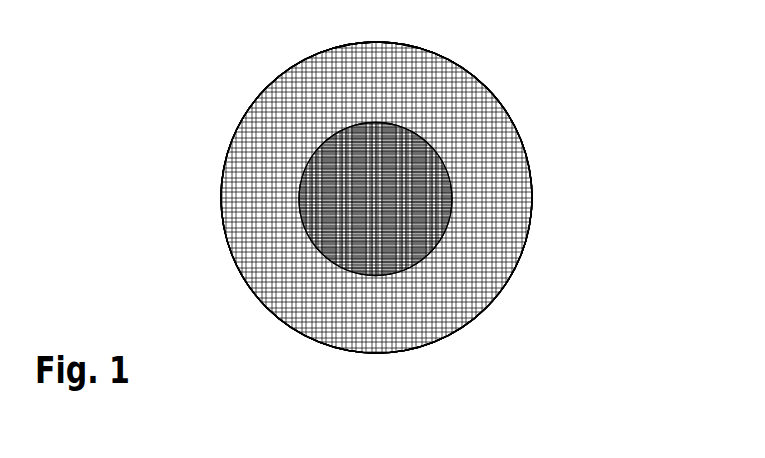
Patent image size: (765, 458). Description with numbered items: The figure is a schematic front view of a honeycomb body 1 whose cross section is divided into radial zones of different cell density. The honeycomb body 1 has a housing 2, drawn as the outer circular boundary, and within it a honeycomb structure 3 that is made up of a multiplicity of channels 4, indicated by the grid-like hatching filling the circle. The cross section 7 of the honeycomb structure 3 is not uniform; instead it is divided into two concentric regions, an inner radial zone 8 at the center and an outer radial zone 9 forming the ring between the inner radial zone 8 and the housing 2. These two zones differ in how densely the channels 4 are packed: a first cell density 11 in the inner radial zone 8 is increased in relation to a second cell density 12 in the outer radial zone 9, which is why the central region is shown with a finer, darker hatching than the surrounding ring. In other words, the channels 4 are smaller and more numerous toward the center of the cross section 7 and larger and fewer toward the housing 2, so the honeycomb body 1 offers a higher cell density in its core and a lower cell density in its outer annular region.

The honeycomb body 1 is at (538, 78).
The housing 2 is at (528, 158).
The honeycomb structure 3 is at (488, 277).
The channels 4 is at (512, 220).
The cross section 7 is at (435, 88).
The inner radial zone 8 is at (347, 157).
The outer radial zone 9 is at (250, 150).
The first cell density 11 is at (318, 200).
The second cell density 12 is at (263, 267).